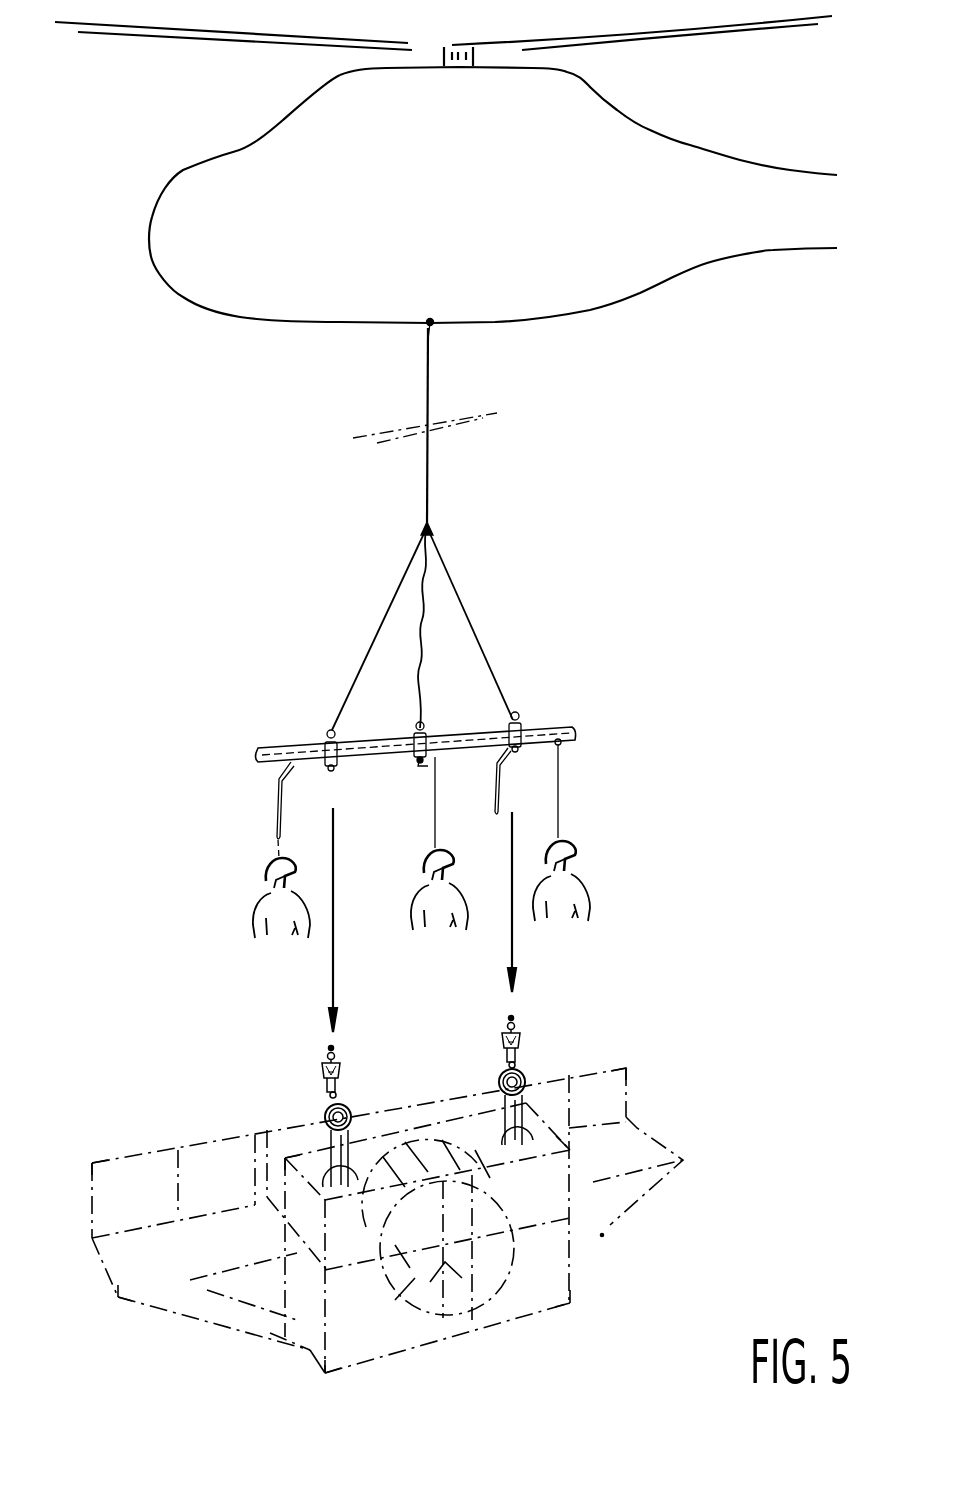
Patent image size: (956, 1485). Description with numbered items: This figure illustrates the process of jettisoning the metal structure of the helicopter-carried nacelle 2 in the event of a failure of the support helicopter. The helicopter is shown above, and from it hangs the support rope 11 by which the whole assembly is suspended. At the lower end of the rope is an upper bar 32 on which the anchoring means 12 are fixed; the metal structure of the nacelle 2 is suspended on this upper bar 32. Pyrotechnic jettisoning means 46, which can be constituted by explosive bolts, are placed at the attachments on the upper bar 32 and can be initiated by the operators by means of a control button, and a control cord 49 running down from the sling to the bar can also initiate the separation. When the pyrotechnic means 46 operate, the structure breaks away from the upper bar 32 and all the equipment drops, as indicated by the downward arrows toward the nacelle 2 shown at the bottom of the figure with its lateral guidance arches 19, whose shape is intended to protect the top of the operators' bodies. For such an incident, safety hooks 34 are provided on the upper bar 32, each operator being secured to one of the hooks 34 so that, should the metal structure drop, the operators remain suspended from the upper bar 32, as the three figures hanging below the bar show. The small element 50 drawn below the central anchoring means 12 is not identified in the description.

The support rope 11 is at (427, 392).
The control cord 49 is at (424, 604).
The upper bar 32 is at (290, 748).
The pyrotechnic jettisoning means 46 is at (322, 744).
The anchoring means 12 is at (336, 732).
The hook 50 is at (418, 762).
The safety hooks 34 is at (272, 768).
The lateral guidance arches 19 is at (272, 825).
The nacelle 2 is at (262, 1105).